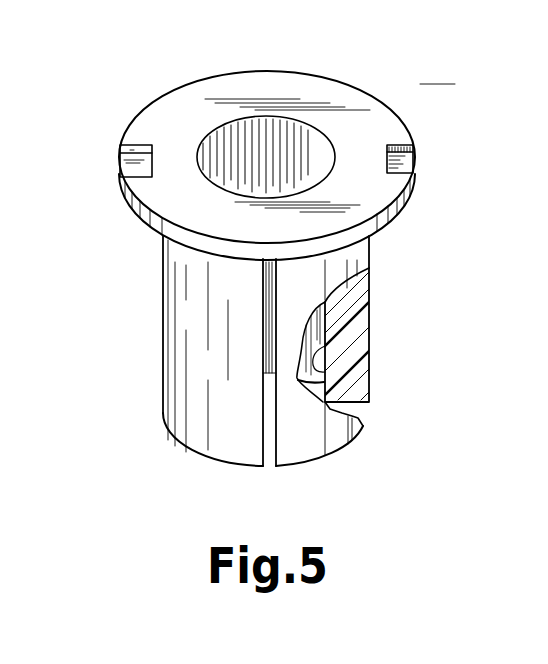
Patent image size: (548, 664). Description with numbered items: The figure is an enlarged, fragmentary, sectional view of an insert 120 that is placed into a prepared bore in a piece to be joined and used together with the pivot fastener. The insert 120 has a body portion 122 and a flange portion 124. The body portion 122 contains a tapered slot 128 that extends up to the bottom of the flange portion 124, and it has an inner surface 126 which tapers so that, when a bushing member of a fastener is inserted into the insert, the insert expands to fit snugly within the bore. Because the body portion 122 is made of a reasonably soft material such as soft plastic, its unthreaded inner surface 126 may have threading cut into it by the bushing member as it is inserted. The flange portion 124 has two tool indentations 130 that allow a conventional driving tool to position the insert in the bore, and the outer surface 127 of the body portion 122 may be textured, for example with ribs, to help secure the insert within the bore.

The insert 120 is at (290, 264).
The body portion 122 is at (324, 352).
The flange portion 124 is at (184, 79).
The inner surface 126 is at (326, 400).
The outer surface 127 is at (369, 338).
The tapered slot 128 is at (272, 469).
The tool indentations 130 is at (125, 162).